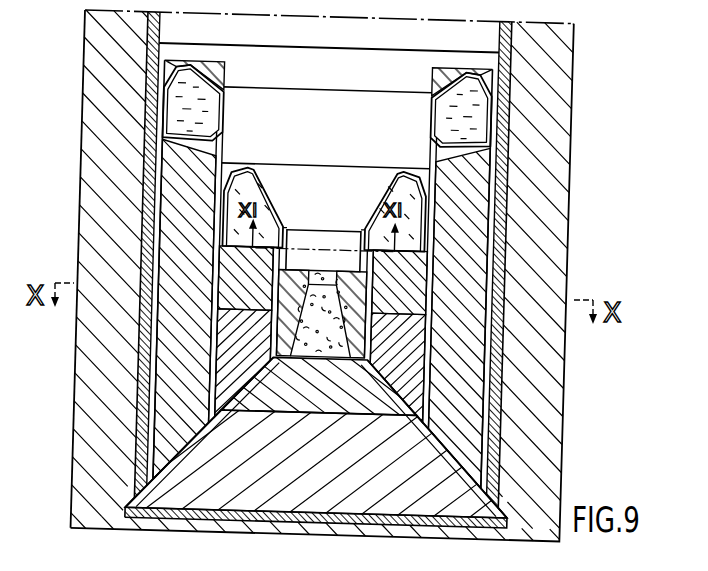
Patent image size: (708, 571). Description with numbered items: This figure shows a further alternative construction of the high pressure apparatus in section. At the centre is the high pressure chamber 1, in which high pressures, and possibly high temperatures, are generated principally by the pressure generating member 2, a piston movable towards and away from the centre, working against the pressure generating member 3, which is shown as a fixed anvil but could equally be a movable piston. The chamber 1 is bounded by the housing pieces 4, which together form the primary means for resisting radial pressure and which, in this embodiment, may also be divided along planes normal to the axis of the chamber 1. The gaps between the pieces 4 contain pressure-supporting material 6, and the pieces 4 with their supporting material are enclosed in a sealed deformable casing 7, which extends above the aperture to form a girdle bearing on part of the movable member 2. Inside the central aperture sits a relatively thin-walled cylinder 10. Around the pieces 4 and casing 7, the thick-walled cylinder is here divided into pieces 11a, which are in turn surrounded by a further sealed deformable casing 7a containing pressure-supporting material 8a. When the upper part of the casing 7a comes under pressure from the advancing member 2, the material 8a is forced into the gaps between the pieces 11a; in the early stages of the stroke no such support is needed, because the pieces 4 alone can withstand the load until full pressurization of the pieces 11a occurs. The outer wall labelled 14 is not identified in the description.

The high pressure chamber 1 is at (295, 296).
The pressure generating member 2 is at (186, 32).
The pressure generating member 3 is at (418, 466).
The pieces 4 is at (235, 333).
The pressure-supporting material 6 is at (225, 233).
The sealed deformable casing 7 is at (432, 201).
The sealed deformable casing 7a is at (497, 104).
The pressure-supporting material 8a is at (172, 97).
The cylinder 10 is at (402, 343).
The pieces of the thick wall cylinder 11a is at (478, 258).
The housing side wall 14 is at (103, 455).